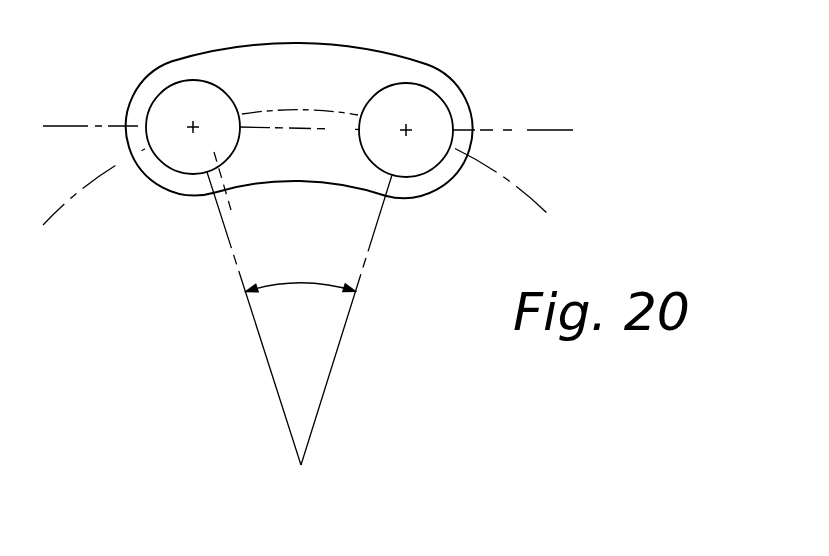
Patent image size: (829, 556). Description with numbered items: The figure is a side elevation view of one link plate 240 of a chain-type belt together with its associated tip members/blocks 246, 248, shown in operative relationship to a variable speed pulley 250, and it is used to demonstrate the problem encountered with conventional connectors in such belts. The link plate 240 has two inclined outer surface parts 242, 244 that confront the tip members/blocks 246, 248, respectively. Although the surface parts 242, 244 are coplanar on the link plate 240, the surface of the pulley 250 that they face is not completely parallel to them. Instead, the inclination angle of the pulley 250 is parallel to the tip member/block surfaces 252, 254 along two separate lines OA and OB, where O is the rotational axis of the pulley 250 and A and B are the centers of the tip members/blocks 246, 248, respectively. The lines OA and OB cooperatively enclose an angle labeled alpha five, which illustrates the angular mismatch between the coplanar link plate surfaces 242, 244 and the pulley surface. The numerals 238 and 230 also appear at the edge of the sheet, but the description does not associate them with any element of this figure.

The link plate 240 is at (302, 73).
The inclined outer surface part 242 is at (229, 212).
The inclined outer surface part 244 is at (420, 160).
The tip member/block 246 is at (182, 93).
The tip member/block 248 is at (423, 117).
The pulley 250 is at (426, 387).
The tip member/block surface 252 is at (183, 155).
The tip member/block surface 254 is at (377, 148).
The adjacent figure element 238 is at (637, 0).
The adjacent figure element 230 is at (713, 0).